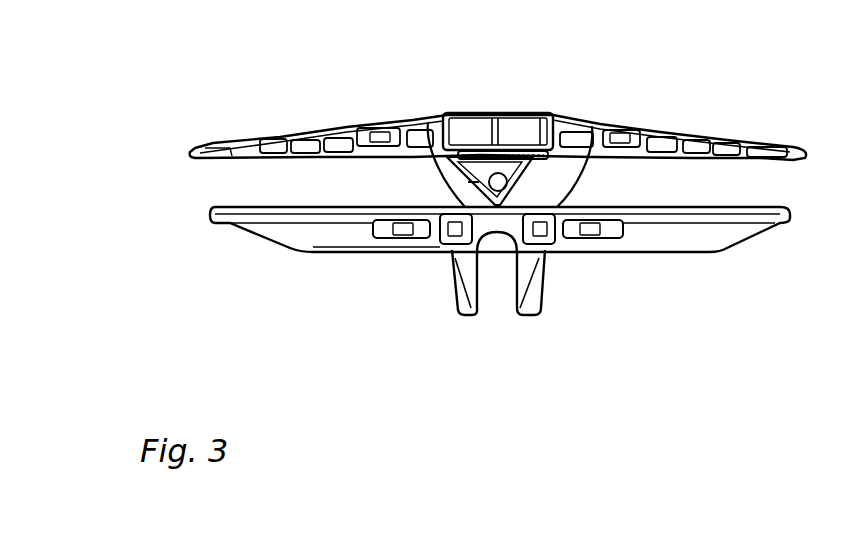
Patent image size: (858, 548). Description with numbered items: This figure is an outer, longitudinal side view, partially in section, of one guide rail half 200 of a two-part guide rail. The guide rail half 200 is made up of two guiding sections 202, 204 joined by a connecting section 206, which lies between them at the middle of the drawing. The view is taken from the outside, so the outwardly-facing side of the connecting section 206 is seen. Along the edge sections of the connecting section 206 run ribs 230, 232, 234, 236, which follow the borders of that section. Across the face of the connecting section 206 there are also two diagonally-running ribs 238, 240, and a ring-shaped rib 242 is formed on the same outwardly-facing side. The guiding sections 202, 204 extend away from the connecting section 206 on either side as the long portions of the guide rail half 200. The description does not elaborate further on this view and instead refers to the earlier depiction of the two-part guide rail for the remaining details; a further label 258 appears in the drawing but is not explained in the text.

The guide rail half 200 is at (250, 125).
The guiding section 202 is at (290, 240).
The guiding section 204 is at (685, 135).
The connecting section 206 is at (420, 112).
The rib 230 is at (413, 228).
The rib 232 is at (478, 150).
The rib 234 is at (618, 128).
The rib 236 is at (560, 253).
The diagonally-running rib 238 is at (528, 150).
The diagonally-running rib 240 is at (497, 232).
The ring-shaped rib 242 is at (523, 240).
The rail pocket 258 is at (362, 247).